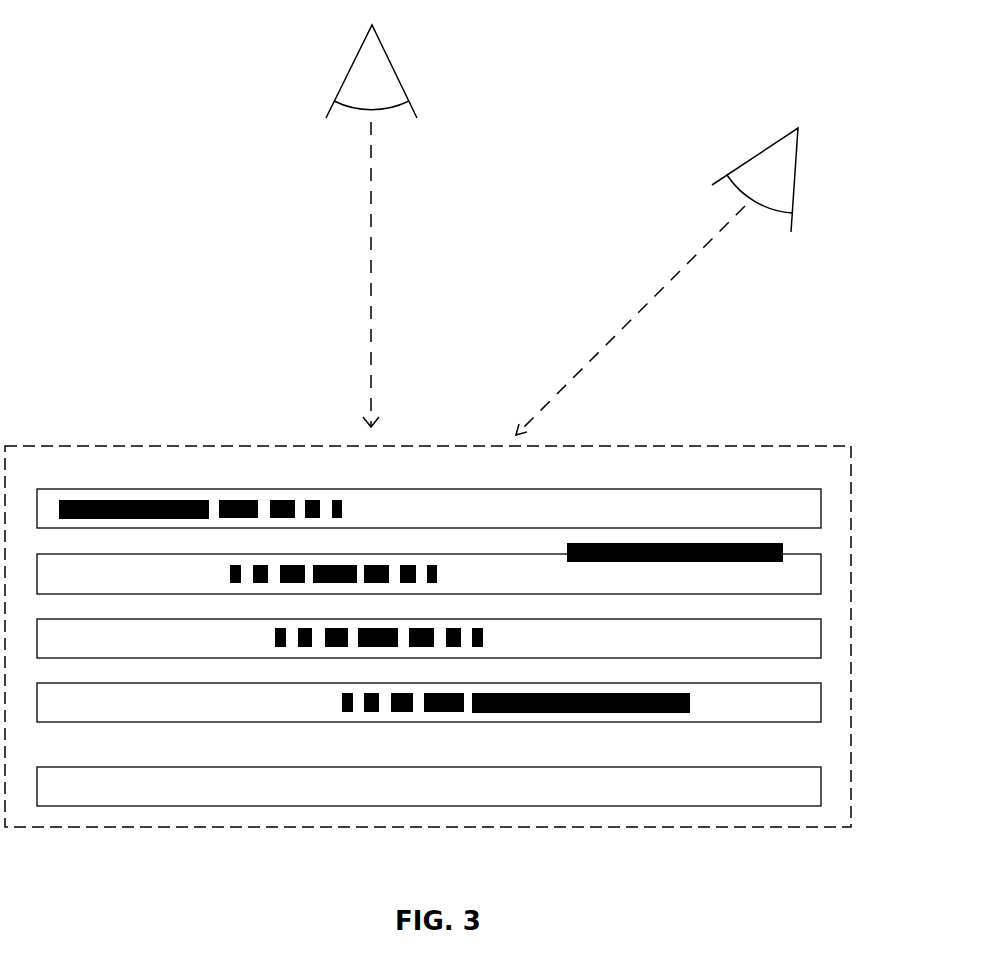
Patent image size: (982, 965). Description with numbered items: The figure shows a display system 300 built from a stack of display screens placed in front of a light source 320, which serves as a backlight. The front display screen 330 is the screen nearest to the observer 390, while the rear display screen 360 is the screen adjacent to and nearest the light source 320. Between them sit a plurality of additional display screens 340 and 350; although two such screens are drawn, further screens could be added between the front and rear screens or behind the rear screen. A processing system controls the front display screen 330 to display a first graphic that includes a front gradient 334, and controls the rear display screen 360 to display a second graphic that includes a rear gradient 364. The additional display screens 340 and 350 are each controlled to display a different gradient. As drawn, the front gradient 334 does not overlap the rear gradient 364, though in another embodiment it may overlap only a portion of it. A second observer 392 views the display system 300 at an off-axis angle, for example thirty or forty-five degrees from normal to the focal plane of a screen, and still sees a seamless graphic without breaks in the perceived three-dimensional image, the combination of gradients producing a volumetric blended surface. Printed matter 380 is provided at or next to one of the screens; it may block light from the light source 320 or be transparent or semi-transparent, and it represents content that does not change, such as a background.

The display system 300 is at (135, 389).
The light source 320 is at (821, 788).
The front display screen 330 is at (821, 503).
The front gradient 334 is at (290, 485).
The additional display screen 340 is at (821, 578).
The additional display screen 350 is at (821, 635).
The rear display screen 360 is at (821, 703).
The rear gradient 364 is at (404, 730).
The printed matter 380 is at (686, 543).
The observer 390 is at (350, 70).
The observer 392 is at (770, 145).